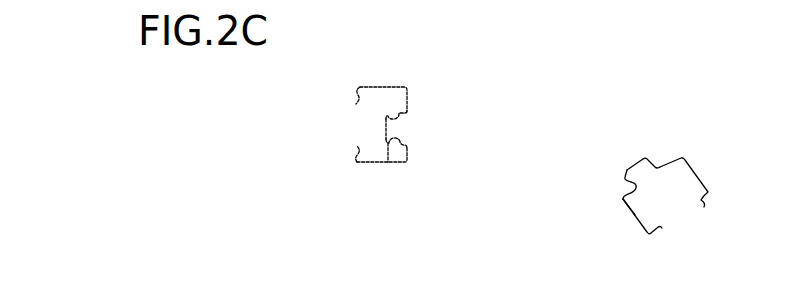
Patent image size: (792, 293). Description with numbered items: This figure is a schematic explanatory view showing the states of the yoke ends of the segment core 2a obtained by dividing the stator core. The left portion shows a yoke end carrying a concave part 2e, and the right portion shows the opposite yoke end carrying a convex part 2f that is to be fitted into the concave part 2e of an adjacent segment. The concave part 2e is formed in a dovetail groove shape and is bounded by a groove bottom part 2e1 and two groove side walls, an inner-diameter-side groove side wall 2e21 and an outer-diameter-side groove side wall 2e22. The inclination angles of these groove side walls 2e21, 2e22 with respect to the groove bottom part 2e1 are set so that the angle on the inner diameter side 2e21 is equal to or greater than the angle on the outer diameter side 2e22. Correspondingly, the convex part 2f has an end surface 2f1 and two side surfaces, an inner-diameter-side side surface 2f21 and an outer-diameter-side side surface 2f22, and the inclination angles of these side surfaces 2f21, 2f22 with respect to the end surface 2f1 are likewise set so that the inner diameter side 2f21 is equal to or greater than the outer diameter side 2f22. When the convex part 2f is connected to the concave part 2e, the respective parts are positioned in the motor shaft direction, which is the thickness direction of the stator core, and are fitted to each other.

The segment core 2a is at (372, 86).
The concave part 2e is at (433, 145).
The groove bottom part 2e1 is at (388, 125).
The groove side wall (inner diameter side) 2e21 is at (400, 138).
The groove side wall (outer diameter side) 2e22 is at (396, 116).
The convex part 2f is at (642, 164).
The end surface 2f1 is at (622, 196).
The side surface (inner diameter side) 2f21 is at (628, 183).
The side surface (outer diameter side) 2f22 is at (658, 163).